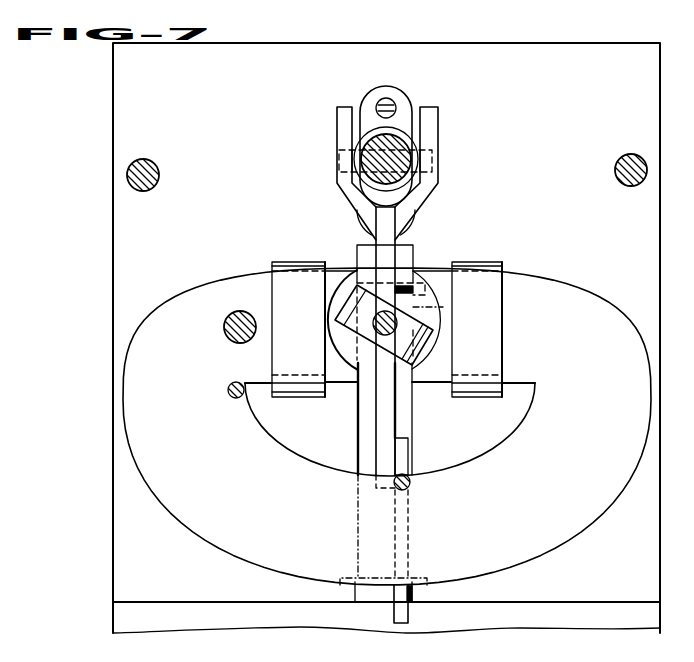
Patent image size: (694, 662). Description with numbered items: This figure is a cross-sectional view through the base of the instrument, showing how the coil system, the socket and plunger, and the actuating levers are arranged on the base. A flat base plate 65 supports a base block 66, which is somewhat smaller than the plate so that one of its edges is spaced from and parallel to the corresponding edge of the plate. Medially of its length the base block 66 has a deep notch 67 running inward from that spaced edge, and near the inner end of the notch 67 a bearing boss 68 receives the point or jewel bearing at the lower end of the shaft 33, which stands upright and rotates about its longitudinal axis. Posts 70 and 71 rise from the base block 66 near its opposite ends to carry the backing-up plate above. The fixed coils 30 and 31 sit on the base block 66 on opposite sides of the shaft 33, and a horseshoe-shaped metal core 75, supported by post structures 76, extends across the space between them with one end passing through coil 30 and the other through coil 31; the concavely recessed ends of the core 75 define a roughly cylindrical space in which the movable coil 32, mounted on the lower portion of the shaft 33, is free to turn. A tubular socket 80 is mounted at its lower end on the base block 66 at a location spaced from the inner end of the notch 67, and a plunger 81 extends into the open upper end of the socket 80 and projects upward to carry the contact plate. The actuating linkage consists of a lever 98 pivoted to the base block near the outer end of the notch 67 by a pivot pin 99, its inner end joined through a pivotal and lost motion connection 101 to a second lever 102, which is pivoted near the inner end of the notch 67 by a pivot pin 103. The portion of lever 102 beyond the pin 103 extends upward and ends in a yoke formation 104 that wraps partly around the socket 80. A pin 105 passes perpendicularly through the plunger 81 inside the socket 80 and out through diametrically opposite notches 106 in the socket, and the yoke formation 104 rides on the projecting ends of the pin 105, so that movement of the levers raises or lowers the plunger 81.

The fixed coil 30 is at (284, 354).
The fixed coil 31 is at (496, 303).
The movable coil 32 is at (328, 320).
The shaft 33 is at (386, 318).
The base plate 65 is at (122, 617).
The base block 66 is at (118, 551).
The notch 67 is at (411, 408).
The bearing boss 68 is at (441, 323).
The post 70 is at (157, 149).
The post 71 is at (627, 158).
The metal core 75 is at (228, 540).
The post structures 76 is at (237, 312).
The tubular socket 80 is at (373, 190).
The plunger 81 is at (373, 173).
The lever 98 is at (408, 606).
The pivot pin 99 is at (358, 577).
The pivotal and lost motion connection 101 is at (410, 457).
The second lever 102 is at (380, 432).
The pivot pin 103 is at (404, 282).
The yoke formation 104 is at (342, 134).
The pin 105 is at (338, 159).
The notches 106 is at (420, 158).